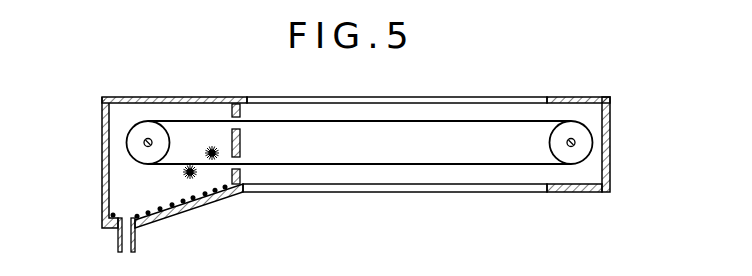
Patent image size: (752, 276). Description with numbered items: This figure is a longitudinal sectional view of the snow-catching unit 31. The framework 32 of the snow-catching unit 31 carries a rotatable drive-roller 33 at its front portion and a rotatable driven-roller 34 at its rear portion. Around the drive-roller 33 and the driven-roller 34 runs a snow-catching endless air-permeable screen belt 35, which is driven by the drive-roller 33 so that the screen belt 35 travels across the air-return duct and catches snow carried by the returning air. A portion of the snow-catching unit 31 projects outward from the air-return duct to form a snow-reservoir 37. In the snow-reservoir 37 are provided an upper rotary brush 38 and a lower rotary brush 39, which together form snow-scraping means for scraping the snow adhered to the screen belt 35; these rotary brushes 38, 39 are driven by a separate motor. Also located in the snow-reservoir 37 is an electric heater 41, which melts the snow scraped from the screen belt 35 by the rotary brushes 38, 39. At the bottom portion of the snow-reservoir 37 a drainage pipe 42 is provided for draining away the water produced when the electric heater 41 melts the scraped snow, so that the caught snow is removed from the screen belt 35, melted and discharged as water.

The snow-catching unit 31 is at (503, 93).
The framework 32 is at (612, 115).
The drive-roller 33 is at (137, 137).
The driven-roller 34 is at (587, 147).
The screen belt 35 is at (428, 120).
The snow-reservoir 37 is at (102, 193).
The upper rotary brush 38 is at (232, 190).
The lower rotary brush 39 is at (186, 181).
The electric heater 41 is at (199, 197).
The drainage pipe 42 is at (115, 238).